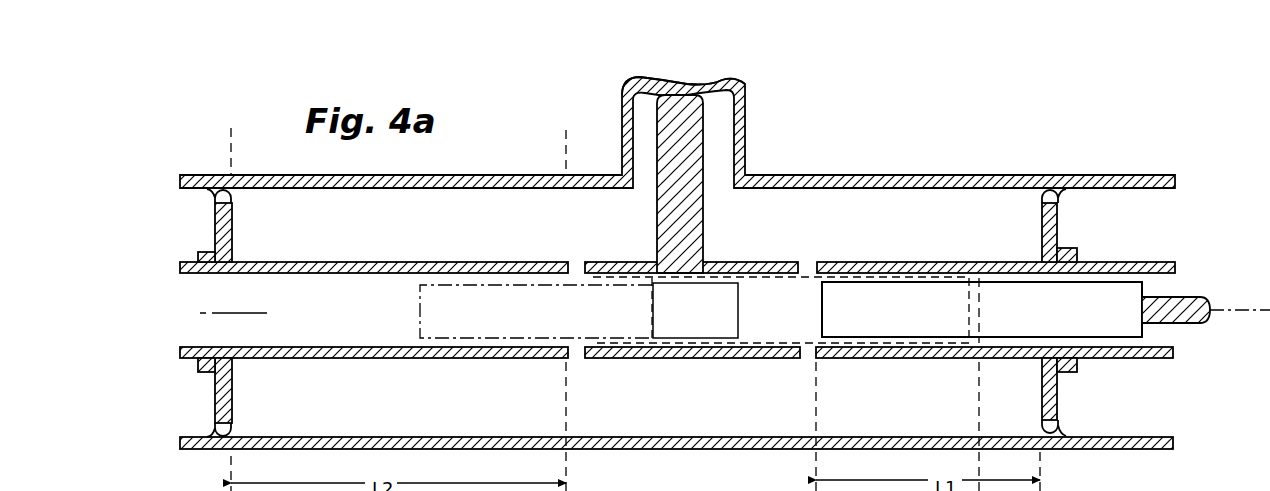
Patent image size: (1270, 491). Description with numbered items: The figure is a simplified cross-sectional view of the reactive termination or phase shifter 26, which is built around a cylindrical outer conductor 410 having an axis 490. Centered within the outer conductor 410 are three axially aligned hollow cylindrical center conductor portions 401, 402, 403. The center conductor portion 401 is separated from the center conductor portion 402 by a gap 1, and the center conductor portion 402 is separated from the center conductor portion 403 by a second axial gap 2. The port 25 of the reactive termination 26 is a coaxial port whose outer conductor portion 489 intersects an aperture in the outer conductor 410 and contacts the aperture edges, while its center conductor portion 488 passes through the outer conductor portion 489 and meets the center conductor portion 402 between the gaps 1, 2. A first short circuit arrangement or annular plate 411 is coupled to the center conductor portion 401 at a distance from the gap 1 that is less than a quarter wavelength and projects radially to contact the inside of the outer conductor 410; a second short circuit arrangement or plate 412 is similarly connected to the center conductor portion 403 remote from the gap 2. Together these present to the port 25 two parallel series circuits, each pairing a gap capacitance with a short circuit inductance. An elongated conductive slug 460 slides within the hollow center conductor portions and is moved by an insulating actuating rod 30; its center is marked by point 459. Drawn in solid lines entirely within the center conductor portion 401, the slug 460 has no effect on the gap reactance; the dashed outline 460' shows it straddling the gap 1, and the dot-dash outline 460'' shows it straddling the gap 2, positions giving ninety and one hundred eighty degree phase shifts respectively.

The cylindrical outer conductor 410 is at (285, 175).
The port 25 is at (688, 70).
The reactive termination or phase shifter 26 is at (813, 159).
The outer conductor portion 489 is at (790, 111).
The center conductor portion 488 is at (693, 226).
The center conductor portion 403 is at (408, 262).
The center conductor portion 402 is at (754, 262).
The center conductor portion 401 is at (922, 262).
The second short circuit arrangement or plate 412 is at (232, 228).
The first short circuit arrangement or annular plate 411 is at (1057, 220).
The center point of slug 459 is at (982, 309).
The conductive slug 460 is at (1185, 326).
The slug position II 460' is at (673, 310).
The slug position III 460'' is at (510, 311).
The insulating actuating rod 30 is at (1210, 310).
The axis 490 is at (188, 313).
The second axial gap 2 is at (585, 250).
The gap 1 is at (808, 250).